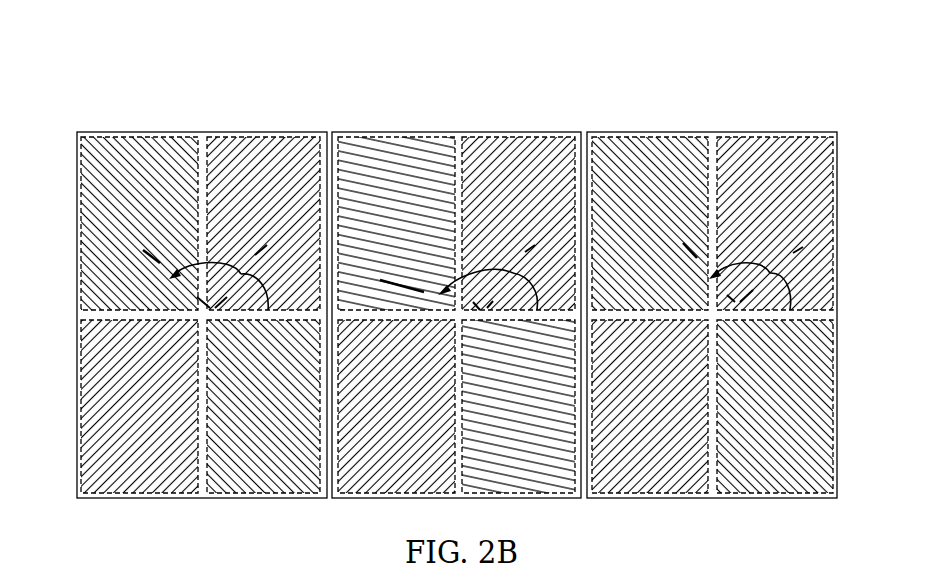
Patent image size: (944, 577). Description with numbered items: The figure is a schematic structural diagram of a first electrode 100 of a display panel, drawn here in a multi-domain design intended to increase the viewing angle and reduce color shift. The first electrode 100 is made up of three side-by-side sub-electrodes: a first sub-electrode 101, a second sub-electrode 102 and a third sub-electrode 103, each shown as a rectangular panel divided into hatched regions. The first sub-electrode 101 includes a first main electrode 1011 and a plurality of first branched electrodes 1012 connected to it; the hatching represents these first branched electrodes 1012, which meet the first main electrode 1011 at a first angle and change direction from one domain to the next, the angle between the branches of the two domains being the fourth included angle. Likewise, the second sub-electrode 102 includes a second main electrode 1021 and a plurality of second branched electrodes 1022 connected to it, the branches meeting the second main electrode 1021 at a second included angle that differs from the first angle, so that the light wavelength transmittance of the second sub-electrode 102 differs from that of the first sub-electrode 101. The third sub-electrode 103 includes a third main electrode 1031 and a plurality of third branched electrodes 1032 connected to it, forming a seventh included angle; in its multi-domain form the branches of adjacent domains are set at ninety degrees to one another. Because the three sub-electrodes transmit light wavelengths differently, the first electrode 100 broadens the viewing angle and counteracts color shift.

The first electrode 100 is at (135, 45).
The first sub-electrode 101 is at (178, 132).
The first main electrode 1011 is at (95, 323).
The first branched electrode 1012 is at (100, 216).
The second sub-electrode 102 is at (380, 132).
The second main electrode 1021 is at (458, 138).
The second branched electrode 1022 is at (535, 148).
The third sub-electrode 103 is at (712, 132).
The third main electrode 1031 is at (825, 318).
The third branched electrode 1032 is at (832, 232).